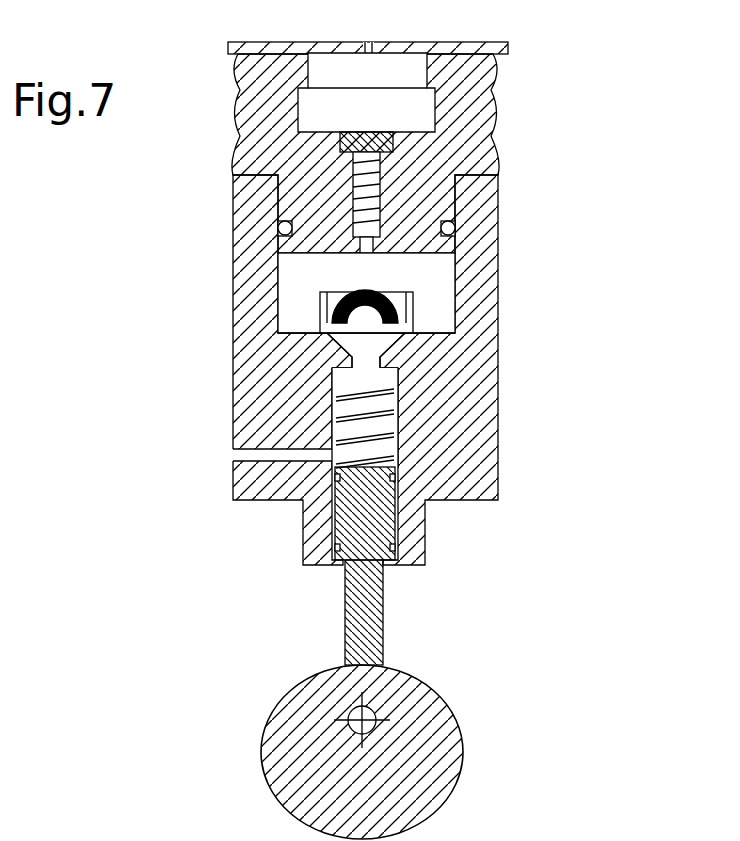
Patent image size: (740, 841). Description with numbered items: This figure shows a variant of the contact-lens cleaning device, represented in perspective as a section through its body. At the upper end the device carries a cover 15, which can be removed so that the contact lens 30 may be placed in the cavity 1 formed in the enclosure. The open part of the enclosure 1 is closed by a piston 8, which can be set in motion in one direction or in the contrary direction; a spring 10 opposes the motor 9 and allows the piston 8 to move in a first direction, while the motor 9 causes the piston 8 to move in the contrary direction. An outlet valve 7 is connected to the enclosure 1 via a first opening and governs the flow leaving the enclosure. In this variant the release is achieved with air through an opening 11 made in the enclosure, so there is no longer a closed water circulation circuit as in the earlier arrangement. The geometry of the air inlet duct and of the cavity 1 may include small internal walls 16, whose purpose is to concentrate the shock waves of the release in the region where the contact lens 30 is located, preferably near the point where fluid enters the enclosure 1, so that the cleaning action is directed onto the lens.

The enclosure 1 is at (430, 285).
The outlet valve 7 is at (378, 238).
The piston 8 is at (373, 517).
The motor 9 is at (443, 763).
The spring 10 is at (363, 415).
The opening 11 is at (262, 457).
The cover 15 is at (465, 112).
The small internal walls 16 is at (330, 310).
The contact lens 30 is at (397, 313).